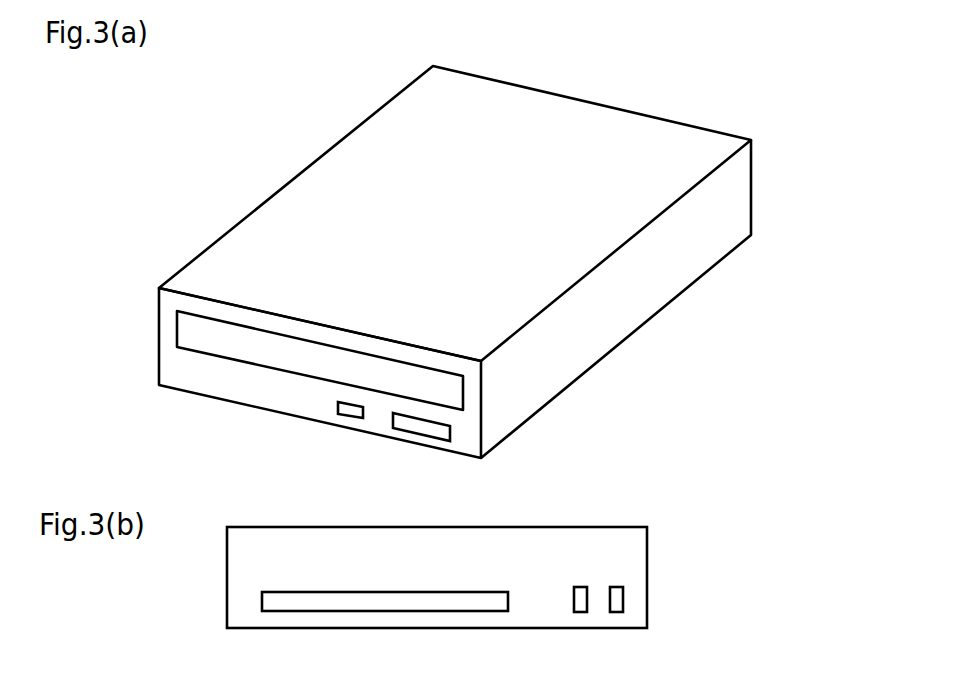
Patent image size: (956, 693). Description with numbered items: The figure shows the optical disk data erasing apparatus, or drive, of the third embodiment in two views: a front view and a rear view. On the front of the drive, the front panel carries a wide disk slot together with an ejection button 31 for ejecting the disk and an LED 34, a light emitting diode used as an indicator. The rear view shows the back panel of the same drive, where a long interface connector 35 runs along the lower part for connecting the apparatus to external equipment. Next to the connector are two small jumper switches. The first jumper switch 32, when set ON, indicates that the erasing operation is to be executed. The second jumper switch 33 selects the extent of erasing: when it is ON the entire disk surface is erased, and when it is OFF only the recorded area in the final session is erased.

The ejection button 31 is at (413, 425).
The LED 34 is at (343, 412).
The interface connector 35 is at (422, 606).
The first jumper switch 32 is at (580, 607).
The second jumper switch 33 is at (617, 607).